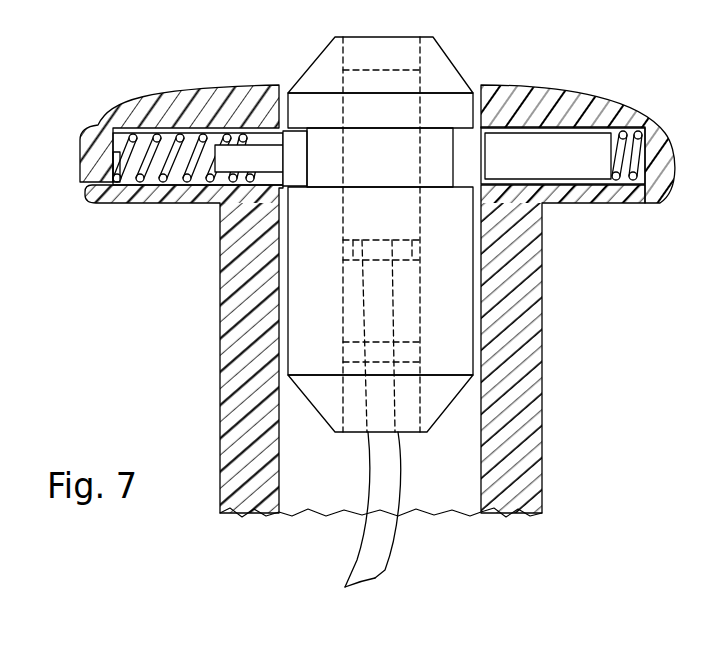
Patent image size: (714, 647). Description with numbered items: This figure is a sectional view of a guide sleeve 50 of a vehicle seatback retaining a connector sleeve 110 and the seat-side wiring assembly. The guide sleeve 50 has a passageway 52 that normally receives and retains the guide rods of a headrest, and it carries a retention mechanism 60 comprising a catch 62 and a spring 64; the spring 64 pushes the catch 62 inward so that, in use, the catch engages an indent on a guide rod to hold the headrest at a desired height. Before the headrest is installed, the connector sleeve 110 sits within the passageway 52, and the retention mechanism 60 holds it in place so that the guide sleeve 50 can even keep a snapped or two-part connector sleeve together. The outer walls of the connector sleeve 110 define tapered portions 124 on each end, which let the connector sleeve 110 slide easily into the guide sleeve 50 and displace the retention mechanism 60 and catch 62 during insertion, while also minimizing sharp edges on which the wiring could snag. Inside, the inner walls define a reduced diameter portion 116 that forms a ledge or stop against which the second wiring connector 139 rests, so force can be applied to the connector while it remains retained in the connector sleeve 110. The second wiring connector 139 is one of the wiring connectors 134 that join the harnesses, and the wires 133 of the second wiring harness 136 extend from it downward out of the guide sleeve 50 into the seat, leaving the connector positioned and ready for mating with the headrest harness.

The guide sleeve 50 is at (545, 383).
The passageway 52 is at (462, 455).
The retention mechanism 60 is at (173, 162).
The catch 62 is at (268, 161).
The spring 64 is at (132, 138).
The connector sleeve 110 is at (455, 207).
The reduced diameter portion 116 is at (410, 240).
The tapered portions 124 is at (440, 47).
The wires 133 is at (385, 490).
The wiring connectors 134 is at (415, 87).
The second wiring harness 136 is at (392, 564).
The second wiring connector 139 is at (368, 82).